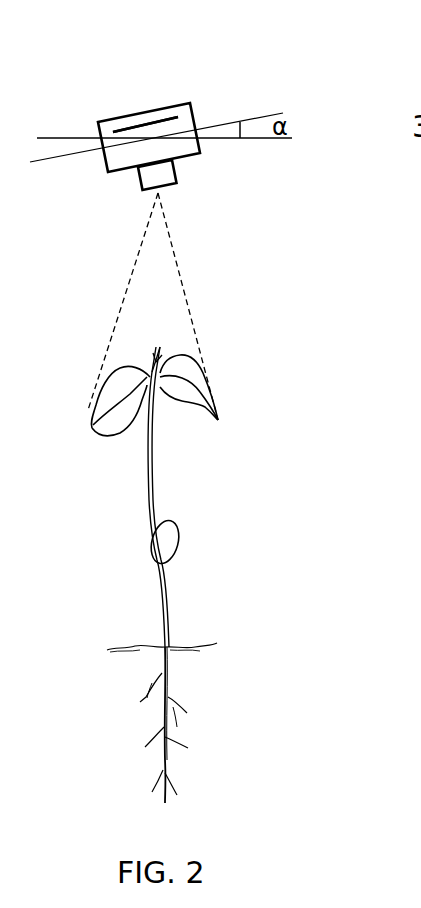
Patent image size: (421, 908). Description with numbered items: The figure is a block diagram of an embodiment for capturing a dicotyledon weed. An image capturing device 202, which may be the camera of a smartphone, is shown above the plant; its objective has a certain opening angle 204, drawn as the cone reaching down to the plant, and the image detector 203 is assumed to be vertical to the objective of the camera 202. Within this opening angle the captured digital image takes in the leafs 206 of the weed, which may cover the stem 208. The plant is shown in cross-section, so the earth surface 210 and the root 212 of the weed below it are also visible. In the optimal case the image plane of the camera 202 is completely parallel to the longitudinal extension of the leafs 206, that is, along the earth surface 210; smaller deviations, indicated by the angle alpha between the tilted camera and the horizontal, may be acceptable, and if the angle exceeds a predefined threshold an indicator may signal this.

The image capturing device 202 is at (113, 96).
The image detector 203 is at (184, 134).
The opening angle 204 is at (193, 288).
The leafs 206 is at (226, 406).
The stem 208 is at (187, 488).
The earth surface 210 is at (229, 643).
The root 212 is at (206, 738).